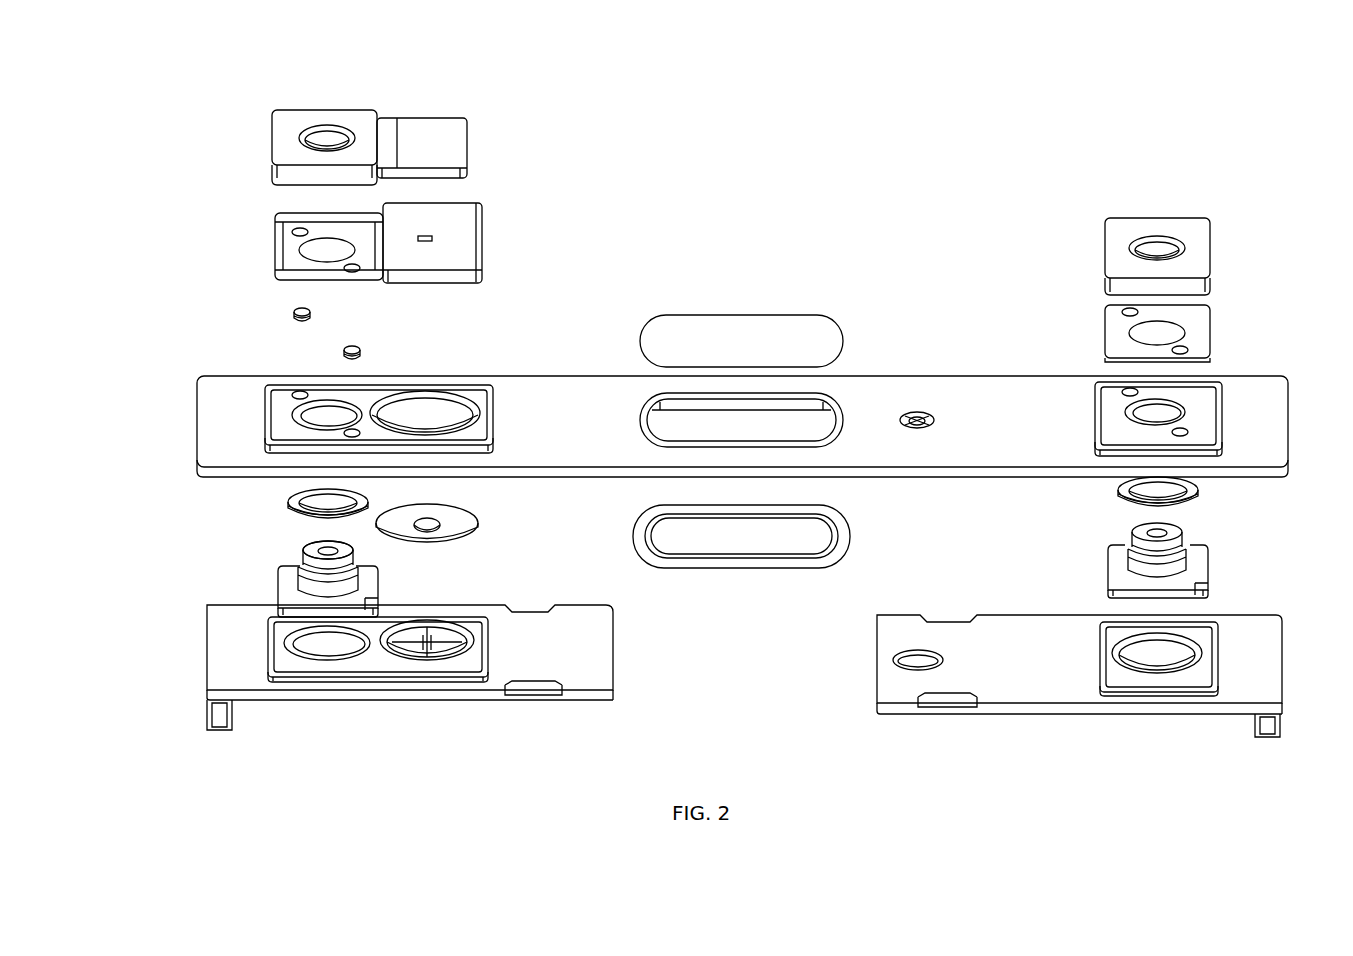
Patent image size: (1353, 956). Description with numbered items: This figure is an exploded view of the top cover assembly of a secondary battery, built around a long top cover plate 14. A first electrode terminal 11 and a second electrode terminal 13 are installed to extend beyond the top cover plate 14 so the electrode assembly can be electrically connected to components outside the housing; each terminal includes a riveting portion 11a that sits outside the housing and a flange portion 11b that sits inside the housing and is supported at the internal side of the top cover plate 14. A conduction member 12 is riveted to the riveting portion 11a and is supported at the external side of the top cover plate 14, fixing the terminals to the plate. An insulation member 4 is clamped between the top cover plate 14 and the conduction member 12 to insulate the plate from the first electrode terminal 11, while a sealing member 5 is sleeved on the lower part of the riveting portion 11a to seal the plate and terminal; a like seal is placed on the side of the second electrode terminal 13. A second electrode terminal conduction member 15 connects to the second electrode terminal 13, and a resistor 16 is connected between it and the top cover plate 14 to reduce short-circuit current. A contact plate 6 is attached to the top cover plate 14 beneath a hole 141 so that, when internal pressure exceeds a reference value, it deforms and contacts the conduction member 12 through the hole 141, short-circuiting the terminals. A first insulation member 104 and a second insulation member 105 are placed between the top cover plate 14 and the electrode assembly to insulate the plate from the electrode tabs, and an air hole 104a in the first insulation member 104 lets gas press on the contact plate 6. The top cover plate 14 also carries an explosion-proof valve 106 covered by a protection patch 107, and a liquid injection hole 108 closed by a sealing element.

The insulation member 4 is at (270, 265).
The sealing member 5 is at (1200, 492).
The contact plate 6 is at (478, 525).
The first electrode terminal 11 is at (163, 512).
The riveting portion 11a is at (310, 553).
The flange portion 11b is at (285, 588).
The conduction member 12 is at (288, 115).
The second electrode terminal 13 is at (1200, 562).
The top cover plate 14 is at (245, 390).
The hole 141 is at (422, 410).
The second electrode terminal conduction member 15 is at (1195, 258).
The resistor 16 is at (1195, 328).
The first insulation member 104 is at (252, 677).
The air hole 104a is at (425, 647).
The second insulation member 105 is at (1045, 682).
The explosion-proof valve 106 is at (747, 568).
The protection patch 107 is at (743, 313).
The liquid injection hole 108 is at (918, 417).